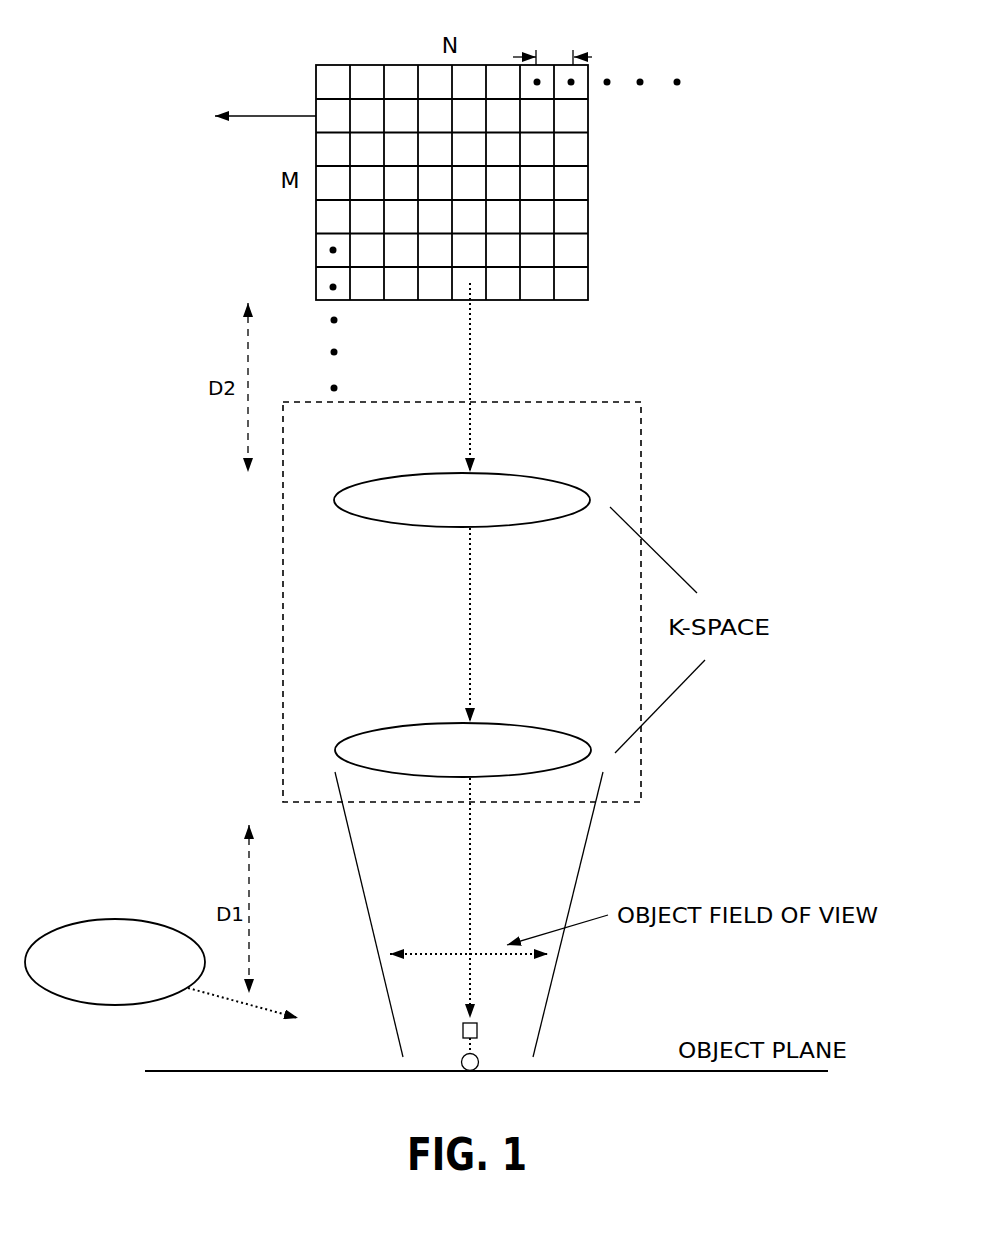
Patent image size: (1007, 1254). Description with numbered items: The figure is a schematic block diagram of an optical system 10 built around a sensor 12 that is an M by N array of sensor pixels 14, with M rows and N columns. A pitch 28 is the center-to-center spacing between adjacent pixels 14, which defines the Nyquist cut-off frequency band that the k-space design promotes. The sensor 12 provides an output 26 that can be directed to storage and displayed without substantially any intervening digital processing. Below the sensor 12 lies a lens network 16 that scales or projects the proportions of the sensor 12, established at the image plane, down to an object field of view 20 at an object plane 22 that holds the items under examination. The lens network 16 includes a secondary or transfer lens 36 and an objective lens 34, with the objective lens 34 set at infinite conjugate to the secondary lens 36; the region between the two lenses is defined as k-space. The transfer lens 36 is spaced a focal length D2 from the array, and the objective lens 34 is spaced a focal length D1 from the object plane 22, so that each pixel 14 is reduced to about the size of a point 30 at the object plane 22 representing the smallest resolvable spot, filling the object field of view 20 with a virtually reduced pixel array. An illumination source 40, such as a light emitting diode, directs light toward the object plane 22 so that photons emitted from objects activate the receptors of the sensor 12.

The optical system 10 is at (742, 78).
The sensor 12 is at (589, 190).
The sensor pixels 14 is at (542, 210).
The lens network 16 is at (641, 485).
The object field of view 20 is at (482, 954).
The object plane 22 is at (570, 1071).
The output 26 is at (262, 115).
The pitch 28 is at (588, 56).
The point 30 is at (478, 1068).
The objective lens 34 is at (527, 724).
The secondary lens 36 is at (507, 473).
The illumination source 40 is at (108, 920).